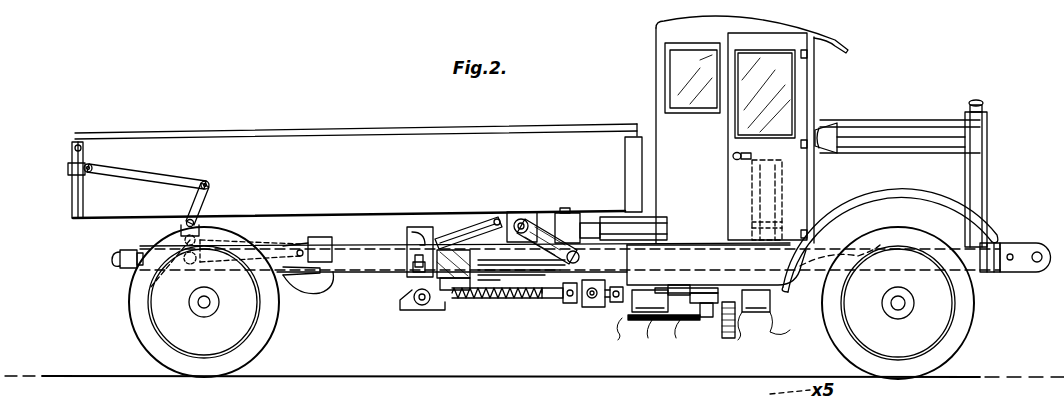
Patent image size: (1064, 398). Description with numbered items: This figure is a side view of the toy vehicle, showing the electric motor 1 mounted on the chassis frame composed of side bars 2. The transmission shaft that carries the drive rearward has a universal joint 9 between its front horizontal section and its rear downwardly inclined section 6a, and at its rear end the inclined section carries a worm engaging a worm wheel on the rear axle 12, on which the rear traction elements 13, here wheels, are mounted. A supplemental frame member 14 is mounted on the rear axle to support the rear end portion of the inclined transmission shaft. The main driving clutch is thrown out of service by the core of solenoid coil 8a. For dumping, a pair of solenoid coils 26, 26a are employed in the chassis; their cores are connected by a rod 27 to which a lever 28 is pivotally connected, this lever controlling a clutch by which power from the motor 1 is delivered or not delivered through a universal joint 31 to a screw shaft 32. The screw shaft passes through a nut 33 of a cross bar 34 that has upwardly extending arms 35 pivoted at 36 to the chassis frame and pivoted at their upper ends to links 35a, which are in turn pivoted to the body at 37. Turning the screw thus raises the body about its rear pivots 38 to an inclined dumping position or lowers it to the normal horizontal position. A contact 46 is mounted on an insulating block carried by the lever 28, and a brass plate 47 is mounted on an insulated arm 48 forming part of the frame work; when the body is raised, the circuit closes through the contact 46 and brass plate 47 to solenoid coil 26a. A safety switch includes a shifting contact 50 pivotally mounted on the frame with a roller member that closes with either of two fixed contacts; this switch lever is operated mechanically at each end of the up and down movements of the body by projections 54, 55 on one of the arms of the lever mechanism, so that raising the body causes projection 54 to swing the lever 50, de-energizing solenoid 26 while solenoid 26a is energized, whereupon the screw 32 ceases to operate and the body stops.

The electric motor 1 is at (752, 193).
The side bars 2 is at (362, 256).
The rear downwardly inclined section 6a is at (458, 235).
The solenoid coil 8a is at (634, 221).
The universal joint 9 is at (500, 218).
The rear axle 12 is at (212, 305).
The rear traction elements 13 is at (263, 319).
The supplemental frame member 14 is at (320, 290).
The solenoid coil 26 is at (748, 300).
The solenoid coil 26a is at (641, 301).
The rod 27 is at (688, 288).
The lever 28 is at (708, 289).
The universal joint 31 is at (596, 308).
The screw shaft 32 is at (540, 300).
The nut 33 is at (410, 266).
The cross bar 34 is at (438, 306).
The arms 35 is at (430, 303).
The links 35a is at (541, 230).
The pivot 36 is at (472, 292).
The pivot 37 is at (520, 215).
The rear pivots 38 is at (132, 296).
The contact 46 is at (724, 322).
The brass plate 47 is at (705, 318).
The insulated arm 48 is at (668, 320).
The shifting contact 50 is at (438, 235).
The projection 54 is at (466, 248).
The projection 55 is at (458, 305).